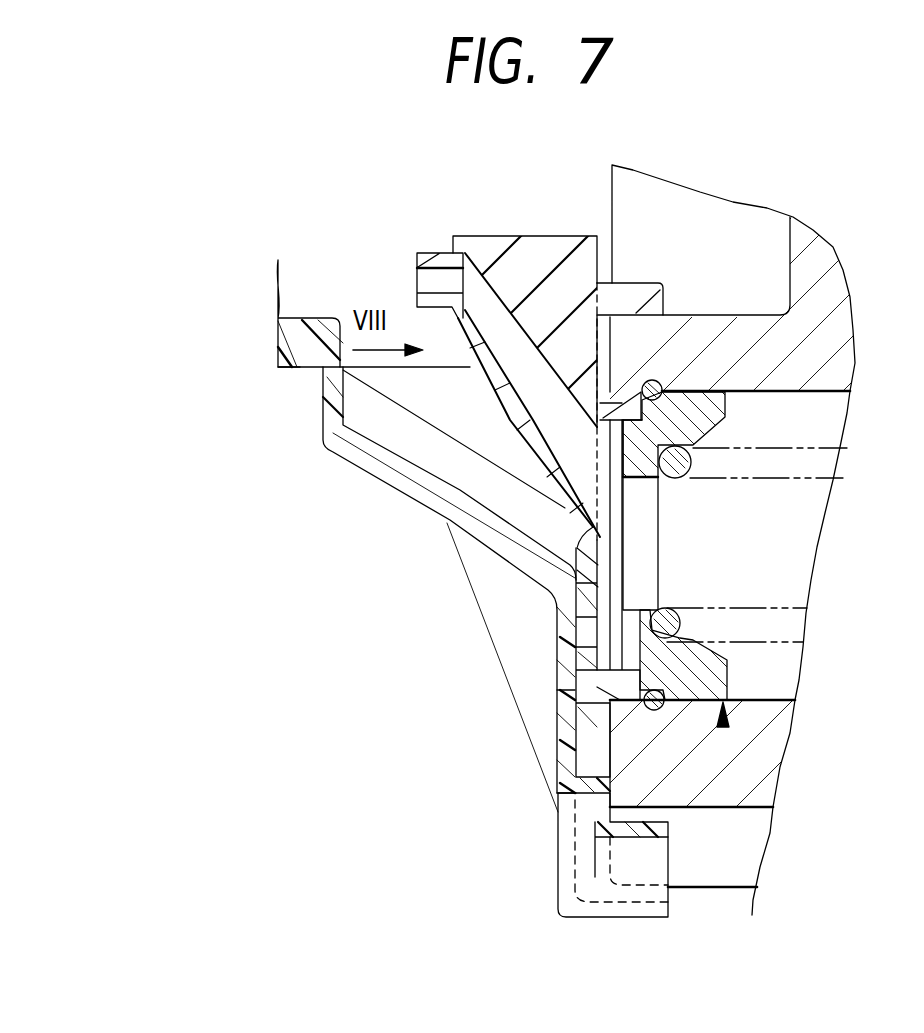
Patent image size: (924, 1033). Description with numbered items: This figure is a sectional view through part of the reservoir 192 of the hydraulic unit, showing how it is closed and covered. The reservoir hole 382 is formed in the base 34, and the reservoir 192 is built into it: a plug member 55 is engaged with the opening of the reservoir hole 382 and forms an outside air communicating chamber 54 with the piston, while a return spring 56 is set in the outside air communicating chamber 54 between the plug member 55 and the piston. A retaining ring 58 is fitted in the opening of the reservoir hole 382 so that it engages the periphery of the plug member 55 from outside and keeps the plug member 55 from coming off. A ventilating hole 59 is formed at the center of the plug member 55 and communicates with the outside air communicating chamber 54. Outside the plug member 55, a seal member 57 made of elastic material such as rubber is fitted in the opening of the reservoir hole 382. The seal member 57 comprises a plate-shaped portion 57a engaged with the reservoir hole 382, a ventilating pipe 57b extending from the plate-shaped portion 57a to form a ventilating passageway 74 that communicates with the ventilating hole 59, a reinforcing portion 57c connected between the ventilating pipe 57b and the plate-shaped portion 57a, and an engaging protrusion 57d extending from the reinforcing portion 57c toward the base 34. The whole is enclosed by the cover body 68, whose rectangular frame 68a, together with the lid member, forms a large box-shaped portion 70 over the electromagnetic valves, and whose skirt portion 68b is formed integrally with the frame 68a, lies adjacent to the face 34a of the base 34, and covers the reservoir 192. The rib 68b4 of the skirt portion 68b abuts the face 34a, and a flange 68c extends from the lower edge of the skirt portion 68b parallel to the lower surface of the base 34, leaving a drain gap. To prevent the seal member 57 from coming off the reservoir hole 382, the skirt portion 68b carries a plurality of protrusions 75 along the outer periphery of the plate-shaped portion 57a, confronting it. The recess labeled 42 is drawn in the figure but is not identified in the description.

The base 34 is at (838, 280).
The recess 42 is at (742, 313).
The retaining ring 58 is at (660, 380).
The plug member 55 is at (728, 410).
The return spring 56 is at (677, 480).
The outside air communicating chamber 54 is at (778, 534).
The ventilating hole 59 is at (637, 480).
The reservoir hole 382 is at (772, 698).
The face of the base 34a is at (612, 730).
The reservoir 192 is at (723, 727).
The seal member 57 is at (403, 540).
The plate-shaped portion 57a is at (597, 630).
The ventilating pipe 57b is at (513, 407).
The reinforcing portion 57c is at (543, 245).
The engaging protrusion 57d is at (637, 287).
The ventilating passageway 74 is at (493, 367).
The cover body 68 is at (430, 588).
The rectangular frame 68a is at (283, 340).
The skirt portion 68b is at (567, 685).
The rib 68b4 is at (590, 800).
The flange 68c is at (640, 838).
The box-shaped portion 70 is at (287, 375).
The protrusions 75 is at (560, 697).